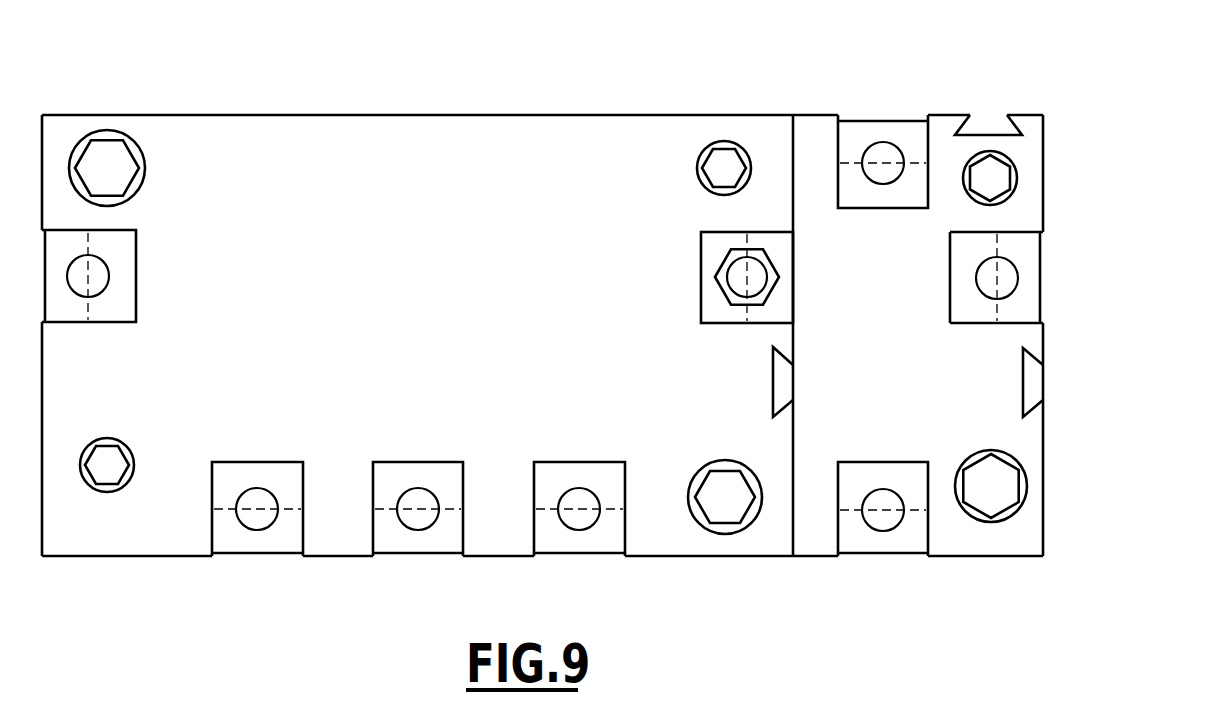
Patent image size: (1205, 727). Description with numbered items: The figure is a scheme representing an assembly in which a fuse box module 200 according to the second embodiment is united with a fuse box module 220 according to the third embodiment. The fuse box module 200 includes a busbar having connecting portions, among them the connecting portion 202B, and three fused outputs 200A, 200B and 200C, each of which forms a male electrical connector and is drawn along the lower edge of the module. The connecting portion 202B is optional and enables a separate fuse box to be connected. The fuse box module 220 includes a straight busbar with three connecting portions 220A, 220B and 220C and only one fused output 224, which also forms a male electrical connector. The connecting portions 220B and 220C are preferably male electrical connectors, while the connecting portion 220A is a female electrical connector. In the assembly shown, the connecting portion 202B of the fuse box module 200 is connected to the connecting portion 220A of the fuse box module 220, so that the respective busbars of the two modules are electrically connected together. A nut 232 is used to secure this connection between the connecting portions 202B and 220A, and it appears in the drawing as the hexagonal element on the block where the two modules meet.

The fuse box module 200 is at (417, 335).
The fused output 200A is at (283, 537).
The fused output 200B is at (395, 535).
The fused output 200C is at (600, 538).
The connecting portion 202B is at (697, 174).
The fuse box module 220 is at (918, 335).
The connecting portion 220A is at (747, 175).
The connecting portion 220B is at (857, 137).
The connecting portion 220C is at (1018, 250).
The fused output 224 is at (859, 538).
The nut 232 is at (758, 250).